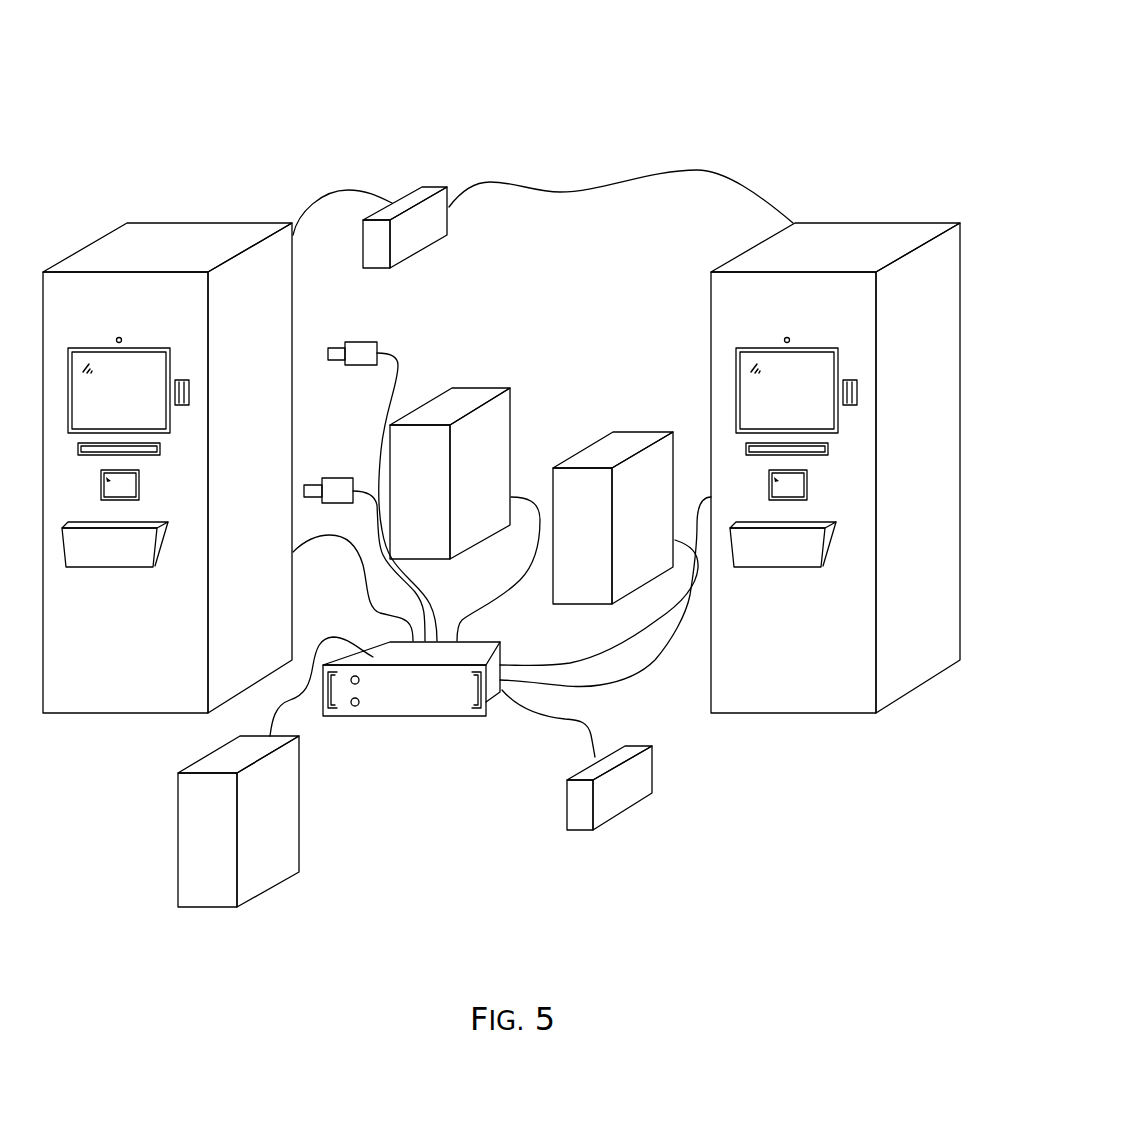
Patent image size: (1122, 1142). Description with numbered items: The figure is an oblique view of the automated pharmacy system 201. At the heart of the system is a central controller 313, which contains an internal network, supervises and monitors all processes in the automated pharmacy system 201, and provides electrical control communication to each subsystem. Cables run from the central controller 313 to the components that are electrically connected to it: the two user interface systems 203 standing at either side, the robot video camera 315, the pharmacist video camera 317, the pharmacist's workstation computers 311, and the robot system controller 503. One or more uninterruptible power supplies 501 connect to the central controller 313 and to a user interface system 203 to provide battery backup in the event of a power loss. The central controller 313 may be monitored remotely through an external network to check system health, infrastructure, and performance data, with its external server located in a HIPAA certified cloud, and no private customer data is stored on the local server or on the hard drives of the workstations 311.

The automated pharmacy system 201 is at (718, 100).
The user interface system 203 is at (214, 222).
The uninterruptible power supply 501 is at (440, 186).
The pharmacist video camera 317 is at (360, 342).
The robot video camera 315 is at (330, 478).
The pharmacist's workstation computer 311 is at (482, 388).
The central controller 313 is at (402, 716).
The robot system controller 503 is at (178, 838).